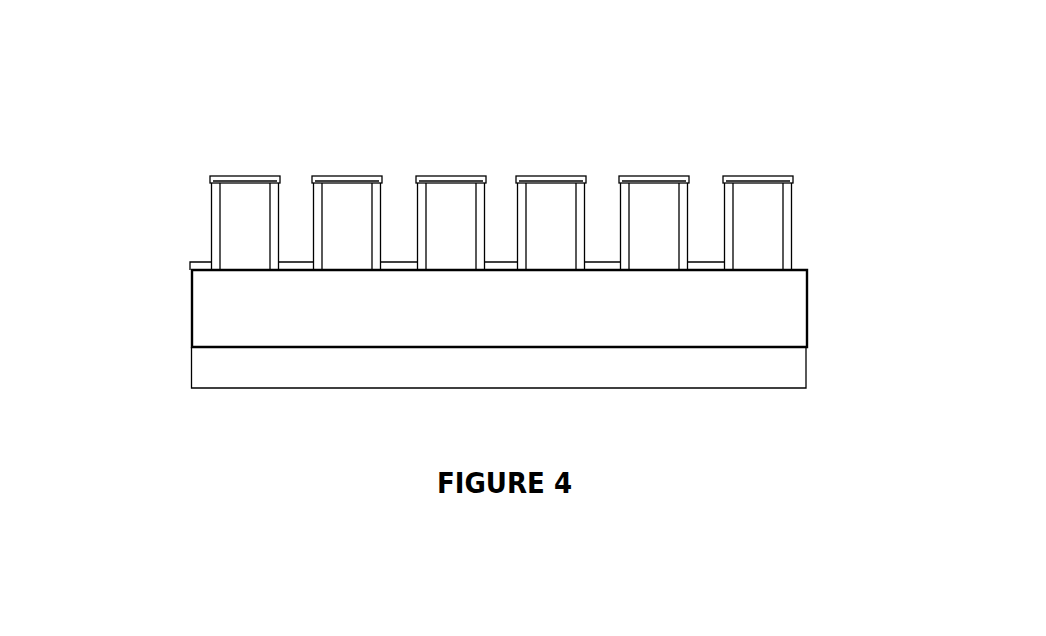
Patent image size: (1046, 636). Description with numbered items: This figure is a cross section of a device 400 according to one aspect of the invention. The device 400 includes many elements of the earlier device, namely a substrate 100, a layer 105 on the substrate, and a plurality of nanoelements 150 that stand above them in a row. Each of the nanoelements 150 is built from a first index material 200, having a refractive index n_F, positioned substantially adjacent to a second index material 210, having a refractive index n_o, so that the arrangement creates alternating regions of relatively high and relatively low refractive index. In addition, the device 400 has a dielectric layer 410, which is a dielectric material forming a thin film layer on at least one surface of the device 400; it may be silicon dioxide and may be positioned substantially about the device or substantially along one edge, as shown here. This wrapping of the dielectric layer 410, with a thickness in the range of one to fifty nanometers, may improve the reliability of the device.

The device 400 is at (501, 194).
The substrate 100 is at (499, 308).
The layer 105 is at (499, 367).
The first index material 200 is at (453, 187).
The second index material 210 is at (599, 193).
The dielectric layer 410 is at (759, 170).
The nanoelements 150 is at (822, 228).